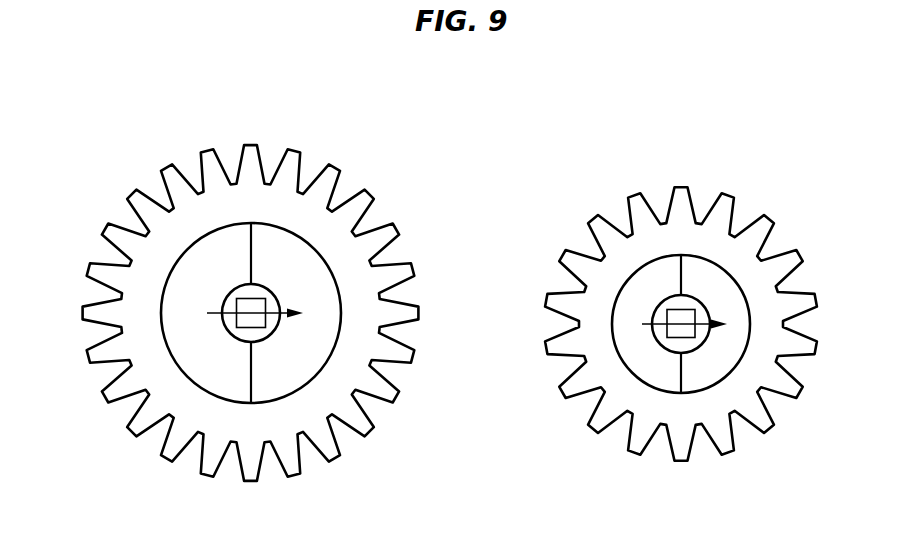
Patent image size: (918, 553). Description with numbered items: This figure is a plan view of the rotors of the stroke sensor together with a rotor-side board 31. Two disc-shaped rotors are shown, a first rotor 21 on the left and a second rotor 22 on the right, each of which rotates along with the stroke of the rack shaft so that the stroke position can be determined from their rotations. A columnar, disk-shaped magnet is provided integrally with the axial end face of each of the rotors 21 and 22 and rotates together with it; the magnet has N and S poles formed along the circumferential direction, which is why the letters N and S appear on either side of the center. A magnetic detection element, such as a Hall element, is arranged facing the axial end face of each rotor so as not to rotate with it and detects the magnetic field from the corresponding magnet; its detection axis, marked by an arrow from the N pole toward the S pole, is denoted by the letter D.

The first rotor 21 is at (132, 180).
The second rotor 22 is at (572, 197).
The rotor-side board 31 is at (315, 263).